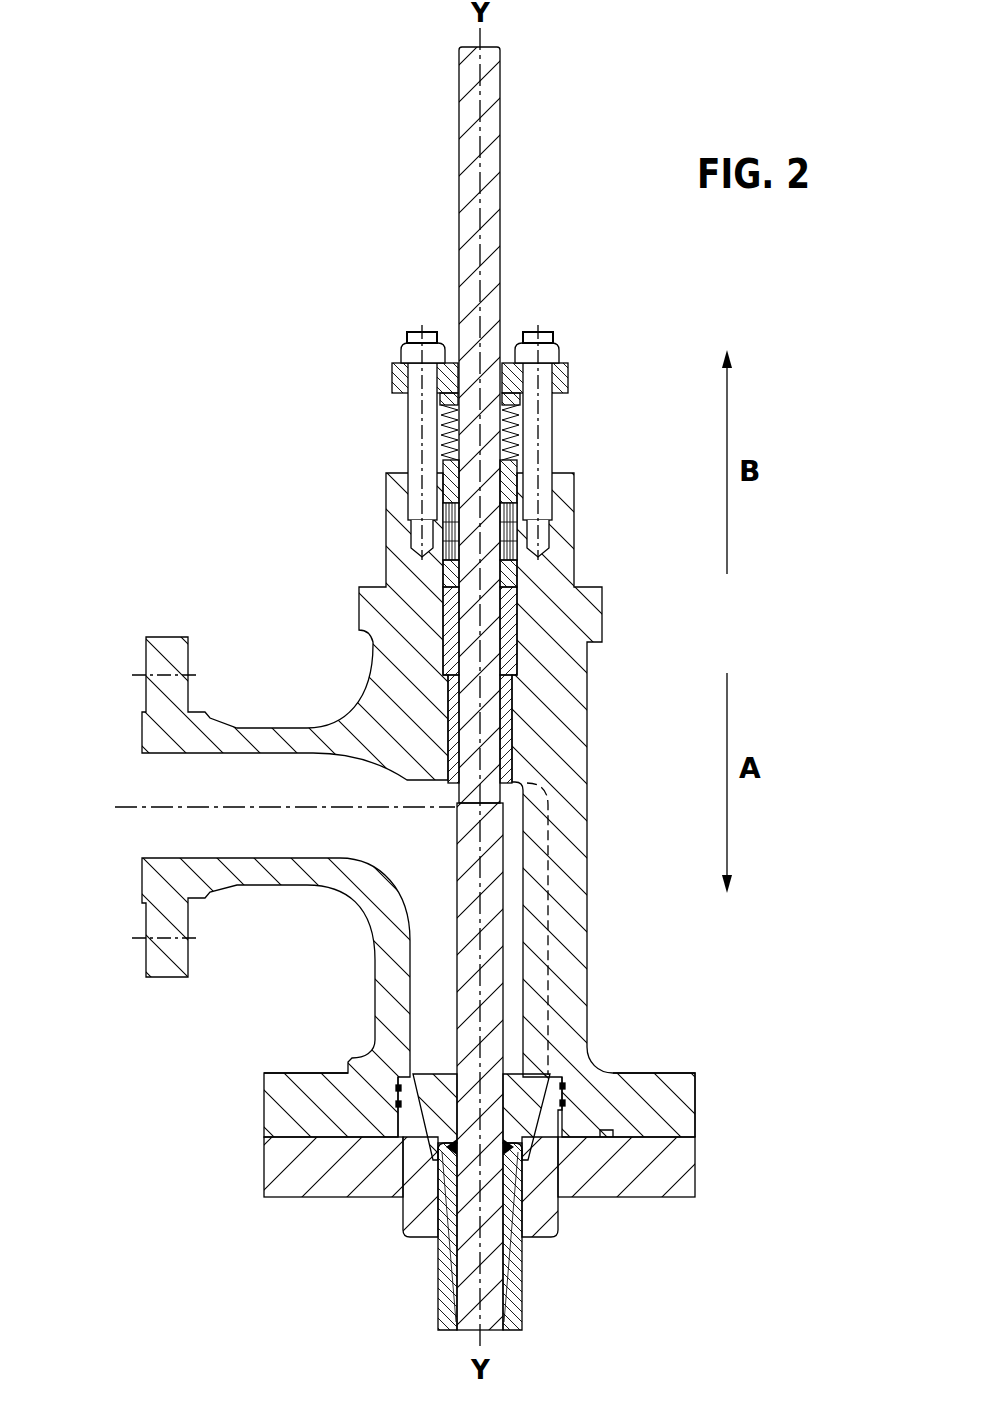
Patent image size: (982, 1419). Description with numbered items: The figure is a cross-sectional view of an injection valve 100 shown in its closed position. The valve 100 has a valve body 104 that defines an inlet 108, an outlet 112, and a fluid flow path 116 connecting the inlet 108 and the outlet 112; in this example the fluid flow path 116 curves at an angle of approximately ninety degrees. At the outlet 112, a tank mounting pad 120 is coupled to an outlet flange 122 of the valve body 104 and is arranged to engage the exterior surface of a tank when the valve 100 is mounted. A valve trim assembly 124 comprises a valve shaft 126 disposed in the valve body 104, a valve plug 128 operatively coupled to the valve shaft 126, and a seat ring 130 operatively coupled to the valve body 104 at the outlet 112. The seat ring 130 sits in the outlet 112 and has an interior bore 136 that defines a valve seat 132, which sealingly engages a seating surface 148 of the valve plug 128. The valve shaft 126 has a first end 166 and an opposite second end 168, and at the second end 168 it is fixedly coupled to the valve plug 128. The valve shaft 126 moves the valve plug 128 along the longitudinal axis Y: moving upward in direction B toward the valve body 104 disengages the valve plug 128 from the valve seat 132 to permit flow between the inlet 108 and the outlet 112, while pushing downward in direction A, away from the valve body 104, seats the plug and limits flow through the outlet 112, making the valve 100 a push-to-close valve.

The injection valve 100 is at (158, 310).
The valve body 104 is at (570, 912).
The inlet 108 is at (152, 778).
The outlet 112 is at (524, 1242).
The fluid flow path 116 is at (395, 880).
The tank mounting pad 120 is at (670, 1185).
The outlet flange 122 is at (683, 1097).
The valve trim assembly 124 is at (574, 1130).
The valve shaft 126 is at (490, 652).
The valve plug 128 is at (452, 1238).
The seat ring 130 is at (420, 1223).
The valve seat 132 is at (440, 1147).
The interior bore 136 is at (432, 1150).
The seating surface 148 is at (527, 1162).
The first end 166 is at (488, 92).
The second end 168 is at (495, 1307).